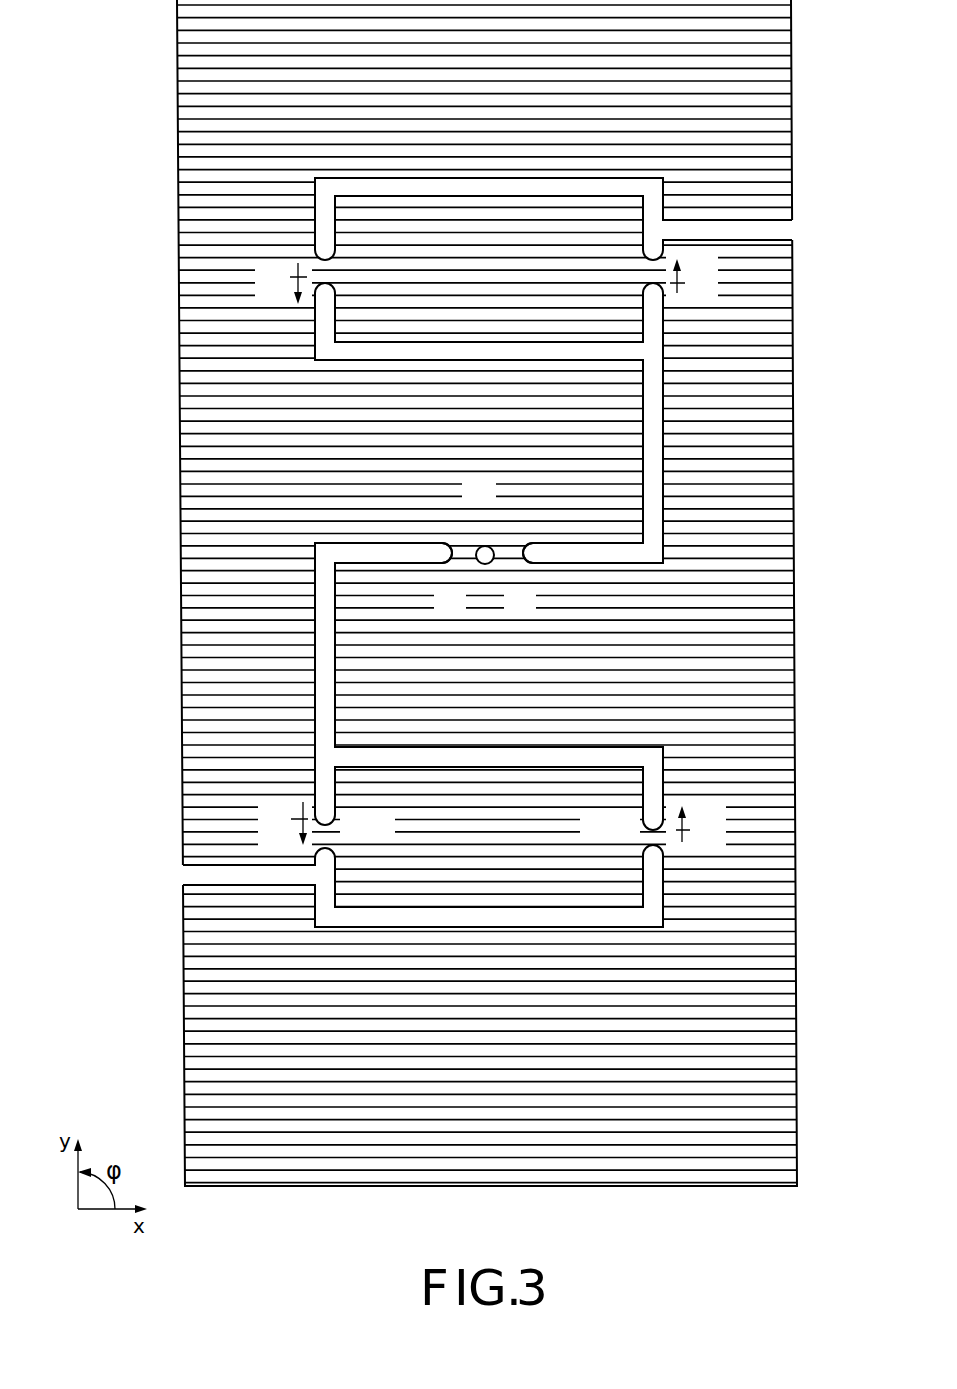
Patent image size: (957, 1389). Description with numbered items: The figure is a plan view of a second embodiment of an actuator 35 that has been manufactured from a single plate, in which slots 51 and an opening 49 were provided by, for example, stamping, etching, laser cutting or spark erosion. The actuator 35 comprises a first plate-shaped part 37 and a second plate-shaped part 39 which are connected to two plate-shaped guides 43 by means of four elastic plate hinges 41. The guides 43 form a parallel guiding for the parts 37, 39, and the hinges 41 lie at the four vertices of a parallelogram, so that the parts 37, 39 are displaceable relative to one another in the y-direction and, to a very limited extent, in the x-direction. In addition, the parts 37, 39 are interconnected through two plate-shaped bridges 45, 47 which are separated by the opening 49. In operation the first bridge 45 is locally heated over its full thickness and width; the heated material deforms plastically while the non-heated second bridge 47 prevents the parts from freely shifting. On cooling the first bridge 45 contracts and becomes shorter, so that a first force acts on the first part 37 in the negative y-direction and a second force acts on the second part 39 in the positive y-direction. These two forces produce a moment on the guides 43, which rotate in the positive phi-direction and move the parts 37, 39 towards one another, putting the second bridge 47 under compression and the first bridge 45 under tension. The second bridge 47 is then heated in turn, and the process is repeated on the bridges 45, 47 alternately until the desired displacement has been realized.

The actuator 35 is at (149, 631).
The first plate-shaped part 37 is at (768, 102).
The second plate-shaped part 39 is at (772, 374).
The elastic plate hinges 41 is at (312, 270).
The plate-shaped guides 43 is at (602, 233).
The first bridge 45 is at (463, 558).
The second bridge 47 is at (507, 556).
The opening 49 is at (485, 545).
The slots 51 is at (652, 455).